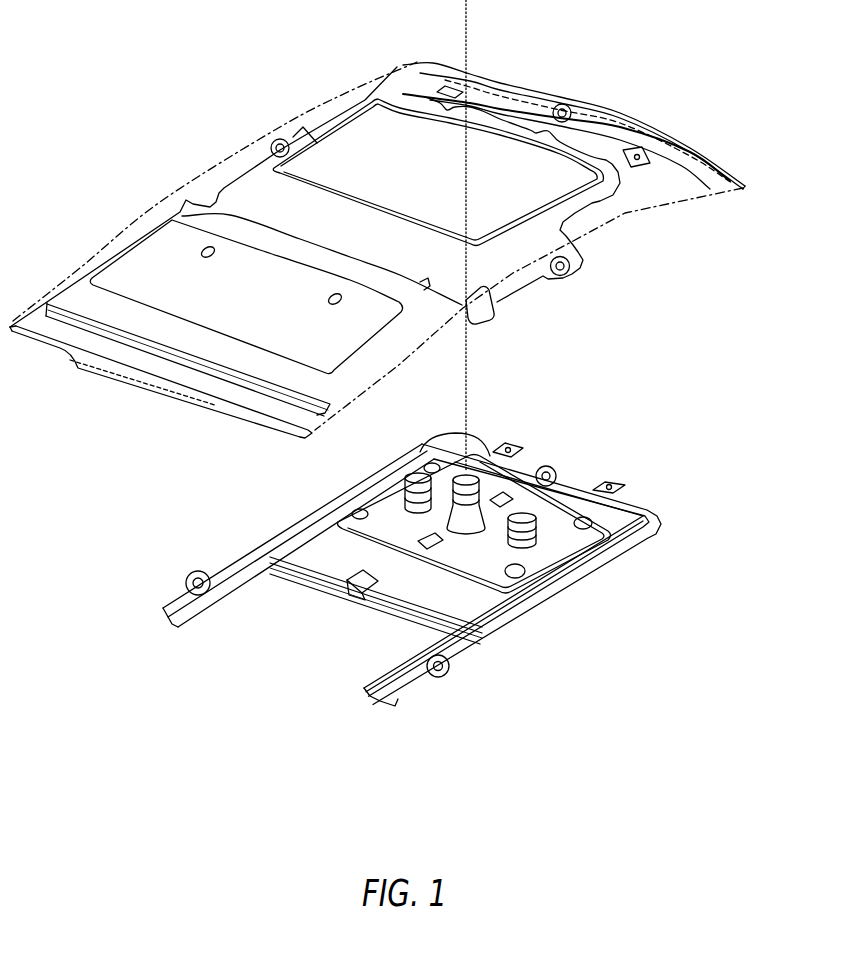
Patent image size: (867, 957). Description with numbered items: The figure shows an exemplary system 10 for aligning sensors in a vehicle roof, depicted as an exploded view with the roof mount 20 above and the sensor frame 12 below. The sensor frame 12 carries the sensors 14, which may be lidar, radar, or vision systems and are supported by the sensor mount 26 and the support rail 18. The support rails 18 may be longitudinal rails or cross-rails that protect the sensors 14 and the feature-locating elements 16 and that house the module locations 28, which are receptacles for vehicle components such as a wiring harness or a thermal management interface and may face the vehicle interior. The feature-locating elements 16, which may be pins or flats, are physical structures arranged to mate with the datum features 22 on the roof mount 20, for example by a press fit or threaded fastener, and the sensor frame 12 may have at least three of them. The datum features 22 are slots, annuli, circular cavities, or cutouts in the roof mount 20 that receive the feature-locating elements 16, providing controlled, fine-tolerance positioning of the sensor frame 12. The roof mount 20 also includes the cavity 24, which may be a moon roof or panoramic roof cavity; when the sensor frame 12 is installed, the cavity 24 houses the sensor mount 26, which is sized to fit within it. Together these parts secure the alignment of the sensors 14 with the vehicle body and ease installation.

The system 10 is at (101, 57).
The sensor frame 12 is at (522, 629).
The sensors 14 is at (417, 475).
The feature-locating elements 16 is at (194, 571).
The support rail 18 is at (405, 610).
The roof mount 20 is at (142, 197).
The datum features 22 is at (279, 139).
The cavity 24 is at (350, 147).
The sensor mount 26 is at (552, 516).
The module locations 28 is at (353, 589).